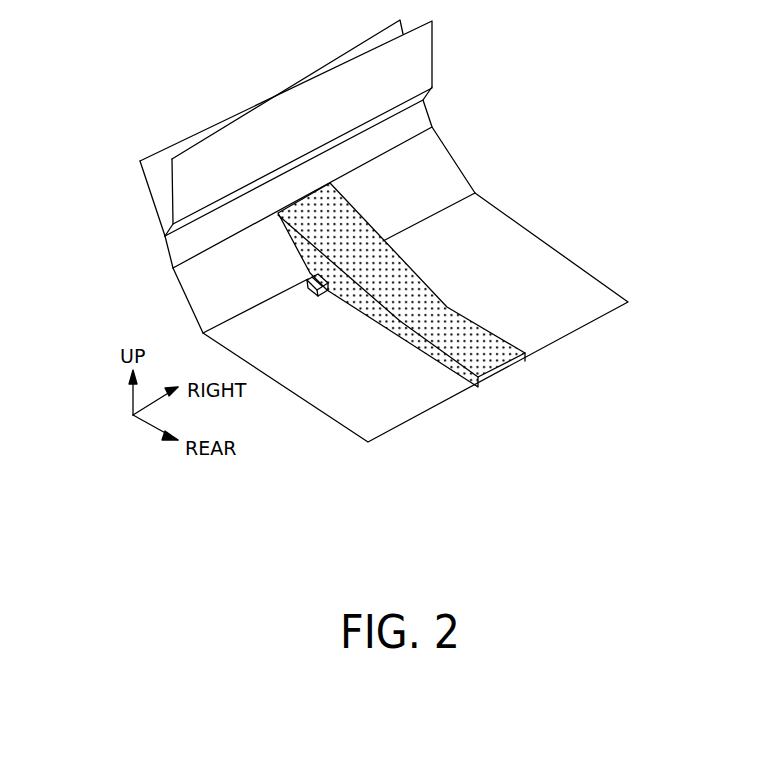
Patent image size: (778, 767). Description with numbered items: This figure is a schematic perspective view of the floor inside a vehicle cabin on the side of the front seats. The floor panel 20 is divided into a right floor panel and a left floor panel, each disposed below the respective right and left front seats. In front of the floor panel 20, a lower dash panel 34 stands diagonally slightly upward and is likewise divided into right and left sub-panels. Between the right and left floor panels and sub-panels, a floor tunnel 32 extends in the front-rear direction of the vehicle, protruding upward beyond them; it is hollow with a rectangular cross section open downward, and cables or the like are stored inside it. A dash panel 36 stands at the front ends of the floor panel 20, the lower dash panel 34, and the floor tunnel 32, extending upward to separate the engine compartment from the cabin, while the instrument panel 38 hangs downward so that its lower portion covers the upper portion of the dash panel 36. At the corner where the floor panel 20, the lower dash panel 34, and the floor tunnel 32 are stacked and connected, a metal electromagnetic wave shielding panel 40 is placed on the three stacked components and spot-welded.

The floor panel 20 is at (333, 402).
The floor tunnel 32 is at (483, 345).
The lower dash panel 34 is at (190, 282).
The dash panel 36 is at (187, 242).
The instrument panel 38 is at (412, 62).
The electromagnetic wave shielding panel 40 is at (320, 293).